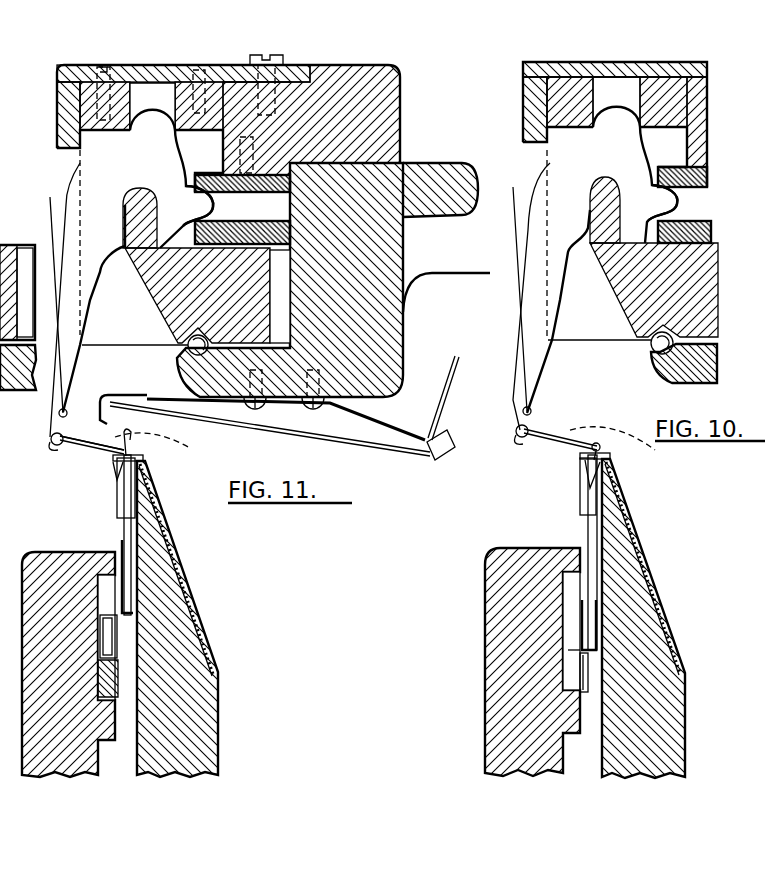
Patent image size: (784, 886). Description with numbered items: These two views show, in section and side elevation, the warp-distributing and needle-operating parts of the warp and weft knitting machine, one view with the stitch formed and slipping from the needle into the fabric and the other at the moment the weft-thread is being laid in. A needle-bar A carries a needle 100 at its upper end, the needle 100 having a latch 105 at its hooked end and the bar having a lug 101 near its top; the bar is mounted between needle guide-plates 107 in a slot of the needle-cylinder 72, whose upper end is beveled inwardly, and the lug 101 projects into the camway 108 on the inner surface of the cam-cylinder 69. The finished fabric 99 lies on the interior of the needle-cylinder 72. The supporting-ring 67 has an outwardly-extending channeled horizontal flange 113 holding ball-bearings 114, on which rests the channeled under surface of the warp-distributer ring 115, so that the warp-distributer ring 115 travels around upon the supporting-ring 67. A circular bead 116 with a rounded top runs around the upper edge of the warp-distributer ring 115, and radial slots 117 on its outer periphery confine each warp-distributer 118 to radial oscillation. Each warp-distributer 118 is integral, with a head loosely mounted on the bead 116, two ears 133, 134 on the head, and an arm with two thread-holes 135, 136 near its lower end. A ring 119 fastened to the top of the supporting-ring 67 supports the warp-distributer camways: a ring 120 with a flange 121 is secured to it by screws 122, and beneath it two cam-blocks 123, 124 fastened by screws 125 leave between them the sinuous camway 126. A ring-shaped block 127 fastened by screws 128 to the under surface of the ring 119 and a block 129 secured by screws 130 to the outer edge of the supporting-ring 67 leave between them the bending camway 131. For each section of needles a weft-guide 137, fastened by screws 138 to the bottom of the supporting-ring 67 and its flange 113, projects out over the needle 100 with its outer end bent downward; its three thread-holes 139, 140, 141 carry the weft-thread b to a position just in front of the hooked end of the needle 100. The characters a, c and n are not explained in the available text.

In FIG. 11, the supporting-ring 67 is at (333, 280).
In FIG. 11, the cam-cylinder 69 is at (57, 662).
In FIG. 10, the cam-cylinder 69 is at (518, 660).
In FIG. 11, the needle-cylinder 72 is at (188, 619).
In FIG. 10, the needle-cylinder 72 is at (643, 630).
In FIG. 11, the finished fabric 99 is at (176, 570).
In FIG. 10, the finished fabric 99 is at (642, 568).
In FIG. 11, the needle 100 is at (124, 537).
In FIG. 10, the needle 100 is at (588, 523).
In FIG. 11, the lug 101 is at (108, 636).
In FIG. 10, the lug 101 is at (580, 668).
In FIG. 11, the latch 105 is at (112, 486).
In FIG. 10, the latch 105 is at (585, 470).
In FIG. 11, the needle guide-plate 107 is at (116, 515).
In FIG. 10, the needle guide-plate 107 is at (580, 505).
In FIG. 11, the camway 108 is at (100, 590).
In FIG. 10, the camway 108 is at (570, 583).
In FIG. 11, the horizontal flange 113 is at (162, 377).
In FIG. 10, the horizontal flange 113 is at (699, 363).
In FIG. 11, the ball-bearings 114 is at (188, 352).
In FIG. 10, the ball-bearings 114 is at (652, 351).
In FIG. 11, the warp-distributer ring 115 is at (150, 310).
In FIG. 10, the warp-distributer ring 115 is at (669, 290).
In FIG. 11, the circular bead 116 is at (140, 190).
In FIG. 10, the circular bead 116 is at (604, 181).
In FIG. 11, the radial slot 117 is at (122, 338).
In FIG. 10, the radial slot 117 is at (586, 334).
In FIG. 11, the warp-distributer 118 is at (70, 182).
In FIG. 10, the warp-distributer 118 is at (537, 182).
In FIG. 11, the ring 119 is at (244, 120).
In FIG. 10, the ring 119 is at (630, 124).
In FIG. 11, the ring 120 is at (292, 65).
In FIG. 11, the flange 121 is at (50, 115).
In FIG. 10, the flange 121 is at (516, 109).
In FIG. 11, the screws 122 is at (261, 103).
In FIG. 11, the cam-block 123 is at (57, 150).
In FIG. 10, the cam-block 123 is at (523, 143).
In FIG. 11, the cam-block 124 is at (199, 161).
In FIG. 10, the cam-block 124 is at (663, 147).
In FIG. 11, the screws 125 is at (141, 79).
In FIG. 11, the camway 126 is at (152, 106).
In FIG. 10, the camway 126 is at (616, 102).
In FIG. 11, the block 127 is at (239, 174).
In FIG. 10, the block 127 is at (698, 177).
In FIG. 11, the screws 128 is at (242, 201).
In FIG. 11, the block 129 is at (242, 225).
In FIG. 10, the block 129 is at (701, 232).
In FIG. 11, the screws 130 is at (290, 240).
In FIG. 11, the camway 131 is at (242, 211).
In FIG. 10, the camway 131 is at (684, 205).
In FIG. 11, the ear 133 is at (152, 123).
In FIG. 10, the ear 133 is at (616, 117).
In FIG. 11, the ear 134 is at (192, 206).
In FIG. 10, the ear 134 is at (657, 203).
In FIG. 11, the thread-hole 135 is at (58, 414).
In FIG. 10, the thread-hole 135 is at (523, 410).
In FIG. 11, the thread-hole 136 is at (50, 442).
In FIG. 10, the thread-hole 136 is at (516, 436).
In FIG. 11, the weft-guide 137 is at (394, 428).
In FIG. 11, the screws 138 is at (284, 396).
In FIG. 11, the thread-hole 139 is at (100, 438).
In FIG. 11, the thread-hole 140 is at (150, 397).
In FIG. 11, the thread-hole 141 is at (437, 443).
In FIG. 11, the rod a is at (50, 212).
In FIG. 10, the rod a is at (514, 236).
In FIG. 11, the weft-thread b is at (345, 445).
In FIG. 10, the weft-thread b is at (596, 451).
In FIG. 11, the spring c is at (112, 462).
In FIG. 10, the spring c is at (605, 455).
In FIG. 11, the arc n is at (158, 447).
In FIG. 10, the arc n is at (619, 444).
In FIG. 11, the needle-bar A is at (116, 708).
In FIG. 10, the needle-bar A is at (582, 750).